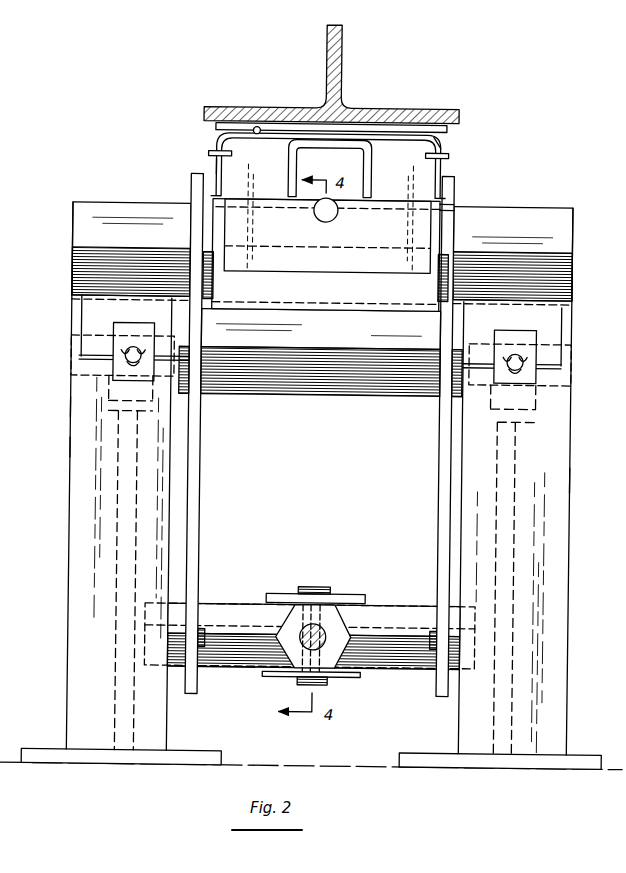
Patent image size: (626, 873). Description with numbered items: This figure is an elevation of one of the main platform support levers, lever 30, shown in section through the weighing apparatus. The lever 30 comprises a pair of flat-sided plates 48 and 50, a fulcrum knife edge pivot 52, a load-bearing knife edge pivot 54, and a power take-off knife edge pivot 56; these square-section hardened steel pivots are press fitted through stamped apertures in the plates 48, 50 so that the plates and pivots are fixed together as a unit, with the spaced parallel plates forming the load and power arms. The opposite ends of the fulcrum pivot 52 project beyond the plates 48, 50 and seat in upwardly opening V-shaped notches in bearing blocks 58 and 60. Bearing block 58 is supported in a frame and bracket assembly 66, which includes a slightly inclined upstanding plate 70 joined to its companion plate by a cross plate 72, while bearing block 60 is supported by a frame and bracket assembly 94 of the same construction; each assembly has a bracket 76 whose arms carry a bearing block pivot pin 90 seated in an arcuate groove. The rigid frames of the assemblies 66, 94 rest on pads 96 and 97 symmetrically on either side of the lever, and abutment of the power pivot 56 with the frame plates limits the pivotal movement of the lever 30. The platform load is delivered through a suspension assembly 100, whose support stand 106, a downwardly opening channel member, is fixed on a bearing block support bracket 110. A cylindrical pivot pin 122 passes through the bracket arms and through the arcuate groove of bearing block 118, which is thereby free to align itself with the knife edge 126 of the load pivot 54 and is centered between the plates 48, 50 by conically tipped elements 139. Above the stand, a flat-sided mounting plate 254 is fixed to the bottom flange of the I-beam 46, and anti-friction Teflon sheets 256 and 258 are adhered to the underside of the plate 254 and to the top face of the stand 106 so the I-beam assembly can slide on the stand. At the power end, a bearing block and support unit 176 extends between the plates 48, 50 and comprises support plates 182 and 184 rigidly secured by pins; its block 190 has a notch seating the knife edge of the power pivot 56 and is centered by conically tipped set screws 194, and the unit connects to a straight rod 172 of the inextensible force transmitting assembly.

The I-beam 46 is at (338, 60).
The mounting plate 254 is at (262, 152).
The anti-friction Teflon sheet 256 is at (254, 152).
The support stand 106 is at (213, 168).
The anti-friction Teflon sheet 258 is at (440, 142).
The suspension assembly 100 is at (449, 143).
The flat-sided plate 50 is at (195, 176).
The flat-sided plate 48 is at (454, 188).
The fulcrum knife edge pivot 52 is at (97, 205).
The bearing block 58 is at (563, 320).
The bearing block support bracket 110 is at (443, 207).
The cylindrical pivot pin 122 is at (320, 218).
The conically tipped elements 139 is at (213, 298).
The knife edge 126 is at (318, 304).
The bearing block 118 is at (357, 312).
The bearing block 60 is at (88, 312).
The bracket 76 is at (109, 344).
The bearing block pivot pin 90 is at (131, 362).
The lever 30 is at (66, 403).
The load-bearing knife edge pivot 54 is at (323, 396).
The frame and bracket assembly 94 is at (66, 446).
The cross plate 72 is at (120, 518).
The upstanding plate 70 is at (68, 495).
The frame and bracket assembly 66 is at (574, 477).
The power take-off knife edge pivot 56 is at (240, 603).
The bearing block and support unit 176 is at (292, 591).
The block 190 is at (218, 620).
The rod 172 is at (327, 627).
The support plate 182 is at (347, 597).
The conically tipped set screws 194 is at (208, 666).
The support plate 184 is at (364, 677).
The pad 97 is at (197, 751).
The pad 96 is at (593, 753).